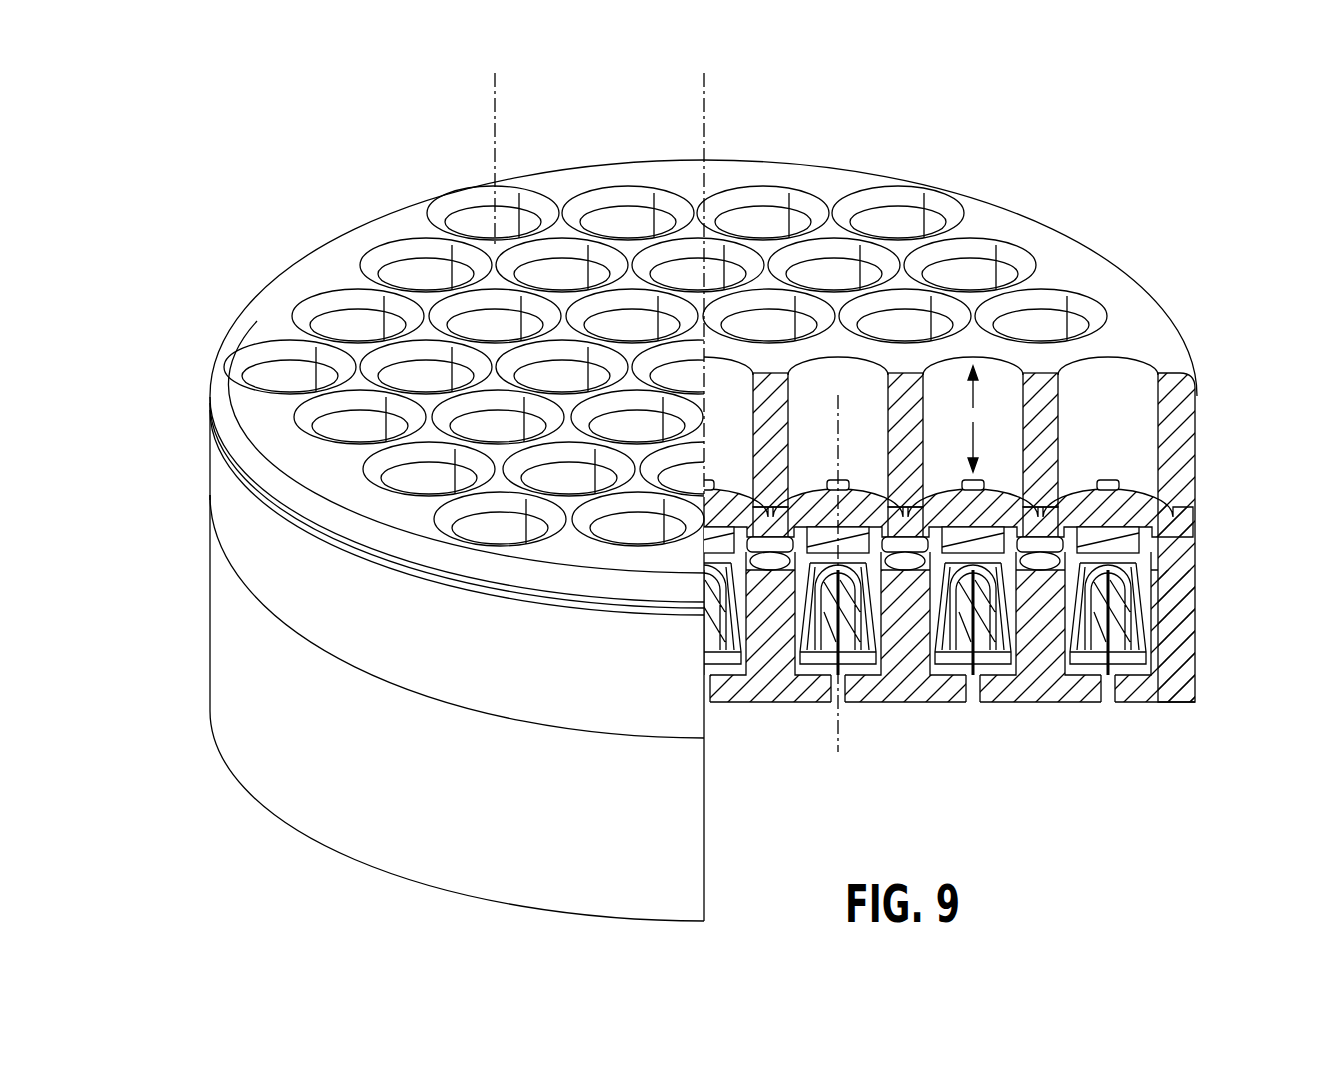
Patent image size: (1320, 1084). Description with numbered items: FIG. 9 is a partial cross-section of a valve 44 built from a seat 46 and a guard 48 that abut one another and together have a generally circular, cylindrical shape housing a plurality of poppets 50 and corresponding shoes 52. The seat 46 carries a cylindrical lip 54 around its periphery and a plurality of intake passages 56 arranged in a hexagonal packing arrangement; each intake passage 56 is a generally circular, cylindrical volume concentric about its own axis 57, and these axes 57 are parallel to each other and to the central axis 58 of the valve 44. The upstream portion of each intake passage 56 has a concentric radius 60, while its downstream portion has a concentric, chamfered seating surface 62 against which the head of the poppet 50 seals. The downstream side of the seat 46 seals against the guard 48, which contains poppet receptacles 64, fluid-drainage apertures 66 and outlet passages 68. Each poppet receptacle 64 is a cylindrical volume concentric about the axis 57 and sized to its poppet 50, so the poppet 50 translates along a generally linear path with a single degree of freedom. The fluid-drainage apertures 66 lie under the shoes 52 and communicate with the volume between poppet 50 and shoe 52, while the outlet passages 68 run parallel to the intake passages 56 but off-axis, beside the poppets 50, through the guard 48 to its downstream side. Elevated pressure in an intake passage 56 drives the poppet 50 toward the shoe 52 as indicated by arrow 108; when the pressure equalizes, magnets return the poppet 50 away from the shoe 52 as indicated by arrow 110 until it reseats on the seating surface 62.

The valve 44 is at (1096, 189).
The seat 46 is at (236, 505).
The guard 48 is at (236, 665).
The poppet 50 is at (800, 207).
The shoe 52 is at (1142, 637).
The cylindrical lip 54 is at (1192, 374).
The intake passage 56 is at (474, 207).
The axis 57 is at (498, 100).
The central axis 58 is at (706, 103).
The concentric radius 60 is at (543, 207).
The seating surface 62 is at (1060, 495).
The poppet receptacle 64 is at (1143, 598).
The fluid-drainage aperture 66 is at (1111, 698).
The outlet passage 68 is at (770, 513).
The arrow 108 is at (973, 446).
The arrow 110 is at (975, 394).